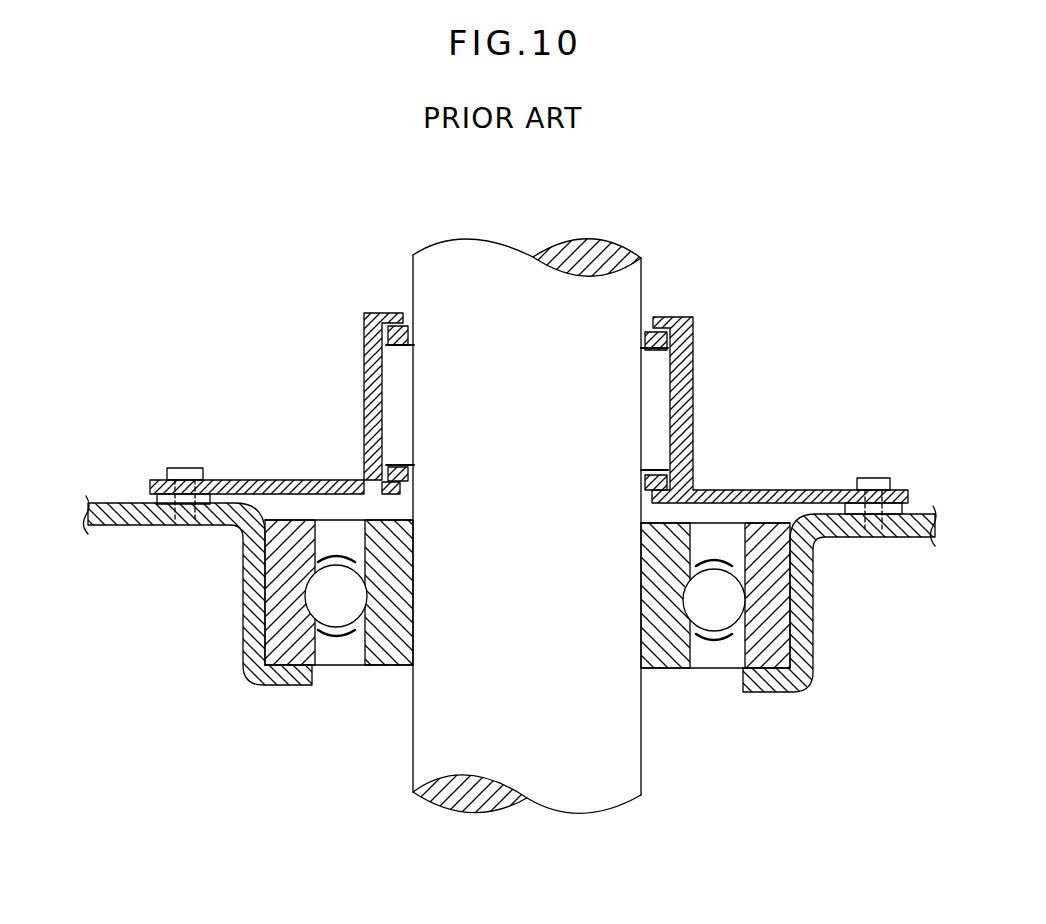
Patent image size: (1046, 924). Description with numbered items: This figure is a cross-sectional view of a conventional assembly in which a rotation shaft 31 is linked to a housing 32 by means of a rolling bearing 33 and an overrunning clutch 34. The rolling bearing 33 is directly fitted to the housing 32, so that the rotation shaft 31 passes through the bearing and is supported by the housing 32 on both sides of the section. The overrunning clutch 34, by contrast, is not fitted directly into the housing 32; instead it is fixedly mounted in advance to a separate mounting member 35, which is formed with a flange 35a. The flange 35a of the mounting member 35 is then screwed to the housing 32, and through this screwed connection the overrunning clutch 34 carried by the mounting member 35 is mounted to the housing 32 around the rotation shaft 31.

The rotation shaft 31 is at (593, 250).
The housing 32 is at (136, 506).
The rolling bearing 33 is at (712, 670).
The overrunning clutch 34 is at (658, 312).
The mounting member 35 is at (690, 392).
The flange 35a is at (812, 490).